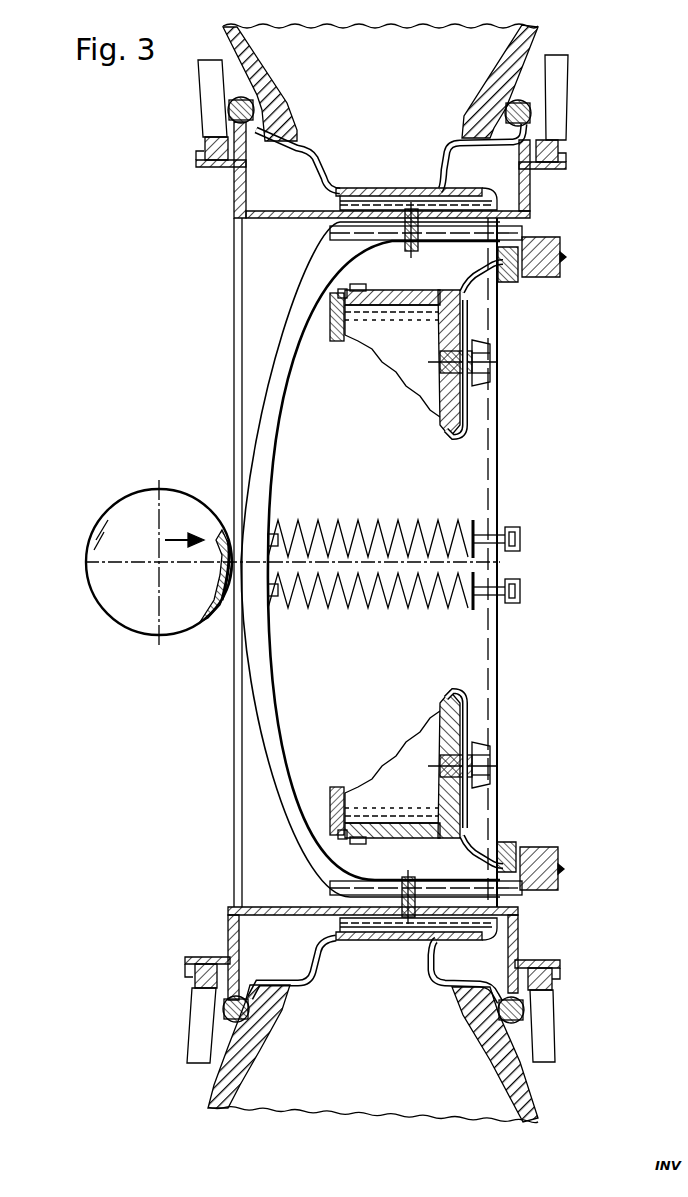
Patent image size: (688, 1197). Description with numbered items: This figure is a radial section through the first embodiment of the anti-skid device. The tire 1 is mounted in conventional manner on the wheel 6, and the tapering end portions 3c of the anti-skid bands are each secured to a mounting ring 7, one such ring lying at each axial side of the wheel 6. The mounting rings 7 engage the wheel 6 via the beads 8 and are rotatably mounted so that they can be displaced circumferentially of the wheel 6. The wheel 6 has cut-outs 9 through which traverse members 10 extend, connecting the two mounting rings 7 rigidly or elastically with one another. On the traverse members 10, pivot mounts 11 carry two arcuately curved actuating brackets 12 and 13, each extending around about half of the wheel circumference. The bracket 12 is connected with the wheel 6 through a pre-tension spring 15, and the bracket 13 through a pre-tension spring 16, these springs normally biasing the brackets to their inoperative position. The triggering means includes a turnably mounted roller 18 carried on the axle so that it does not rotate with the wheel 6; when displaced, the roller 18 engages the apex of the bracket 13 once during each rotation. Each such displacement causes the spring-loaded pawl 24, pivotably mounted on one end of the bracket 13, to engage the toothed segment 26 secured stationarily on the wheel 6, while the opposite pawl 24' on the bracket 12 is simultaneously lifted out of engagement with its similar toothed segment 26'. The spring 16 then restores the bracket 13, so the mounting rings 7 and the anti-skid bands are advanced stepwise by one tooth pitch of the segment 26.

The tire 1 is at (545, 52).
The end portions of the anti-skid bands 3c is at (555, 86).
The wheel 6 is at (332, 180).
The mounting ring 7 is at (198, 166).
The beads 8 is at (226, 106).
The cut-outs 9 is at (500, 215).
The traverse members 10 is at (288, 222).
The pivot mounts 11 is at (409, 206).
The bracket 12 is at (560, 247).
The bracket 13 is at (474, 228).
The pre-tension spring 15 is at (436, 598).
The pre-tension spring 16 is at (434, 544).
The roller 18 is at (142, 606).
The pawl 24 is at (563, 866).
The pawl 24' is at (566, 267).
The toothed segment 26 is at (533, 838).
The toothed segment 26' is at (533, 286).